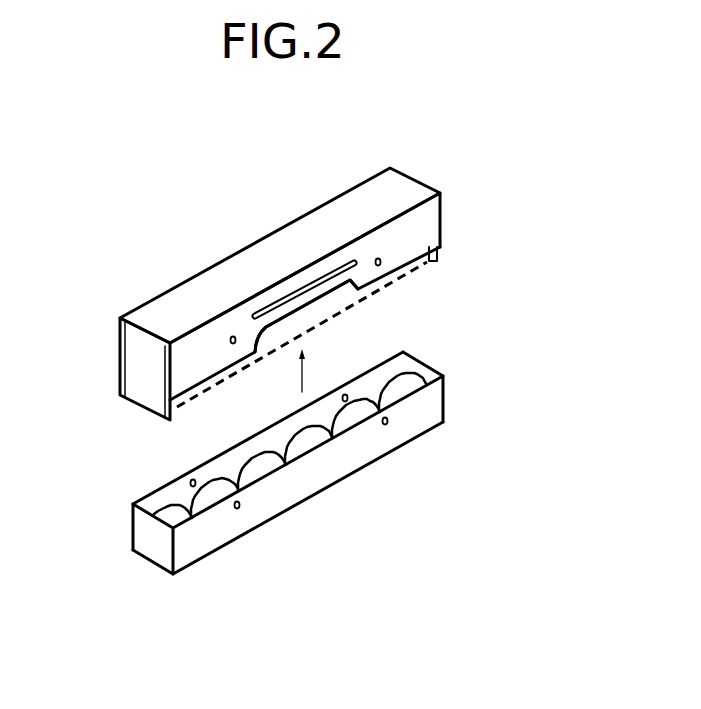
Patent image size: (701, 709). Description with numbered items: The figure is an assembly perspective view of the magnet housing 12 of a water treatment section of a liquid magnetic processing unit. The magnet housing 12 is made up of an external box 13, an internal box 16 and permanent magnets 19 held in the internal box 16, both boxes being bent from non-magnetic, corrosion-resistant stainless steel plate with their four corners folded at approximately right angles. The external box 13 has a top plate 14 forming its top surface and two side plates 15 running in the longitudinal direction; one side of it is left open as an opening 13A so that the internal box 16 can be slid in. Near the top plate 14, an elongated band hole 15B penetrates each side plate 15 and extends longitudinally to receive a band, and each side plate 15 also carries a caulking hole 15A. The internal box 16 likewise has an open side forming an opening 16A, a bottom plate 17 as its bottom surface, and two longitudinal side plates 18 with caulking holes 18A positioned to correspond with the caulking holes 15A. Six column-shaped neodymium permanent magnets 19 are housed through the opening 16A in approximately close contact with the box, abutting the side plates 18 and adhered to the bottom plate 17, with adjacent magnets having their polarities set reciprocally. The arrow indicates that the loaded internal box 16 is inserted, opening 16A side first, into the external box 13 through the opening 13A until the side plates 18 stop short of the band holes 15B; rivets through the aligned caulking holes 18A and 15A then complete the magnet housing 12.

The magnet housing 12 is at (141, 222).
The external box 13 is at (239, 242).
The opening 13A is at (280, 338).
The top plate 14 is at (298, 233).
The side plate 15 is at (118, 332).
The caulking hole 15A is at (386, 262).
The band hole 15B is at (355, 260).
The internal box 16 is at (386, 298).
The opening 16A is at (328, 394).
The bottom plate 17 is at (182, 573).
The side plate 18 is at (347, 467).
The caulking hole 18A is at (191, 481).
The permanent magnet 19 is at (404, 398).